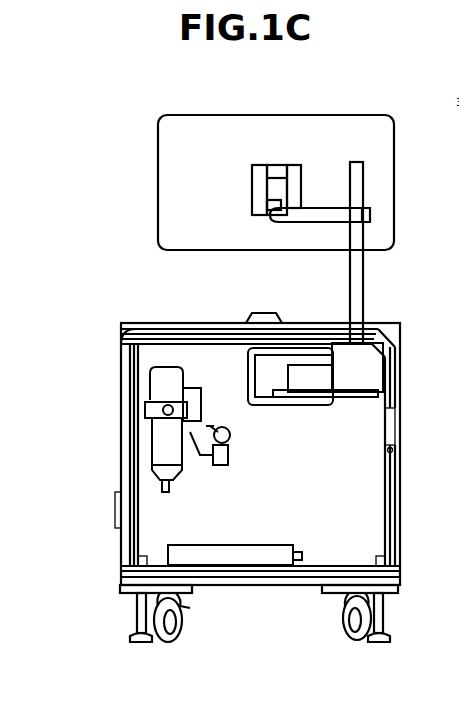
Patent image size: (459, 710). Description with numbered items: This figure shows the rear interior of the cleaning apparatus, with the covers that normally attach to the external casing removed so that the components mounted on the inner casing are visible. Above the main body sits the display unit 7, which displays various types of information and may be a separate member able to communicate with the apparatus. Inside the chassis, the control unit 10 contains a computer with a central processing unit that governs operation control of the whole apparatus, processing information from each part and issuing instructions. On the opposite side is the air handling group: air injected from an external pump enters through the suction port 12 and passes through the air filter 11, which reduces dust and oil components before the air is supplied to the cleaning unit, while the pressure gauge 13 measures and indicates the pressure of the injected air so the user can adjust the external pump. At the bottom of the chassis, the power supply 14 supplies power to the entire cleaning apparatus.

The display unit 7 is at (229, 115).
The control unit 10 is at (355, 407).
The air filter 11 is at (158, 377).
The suction port 12 is at (147, 412).
The pressure gauge 13 is at (160, 445).
The power supply 14 is at (247, 555).